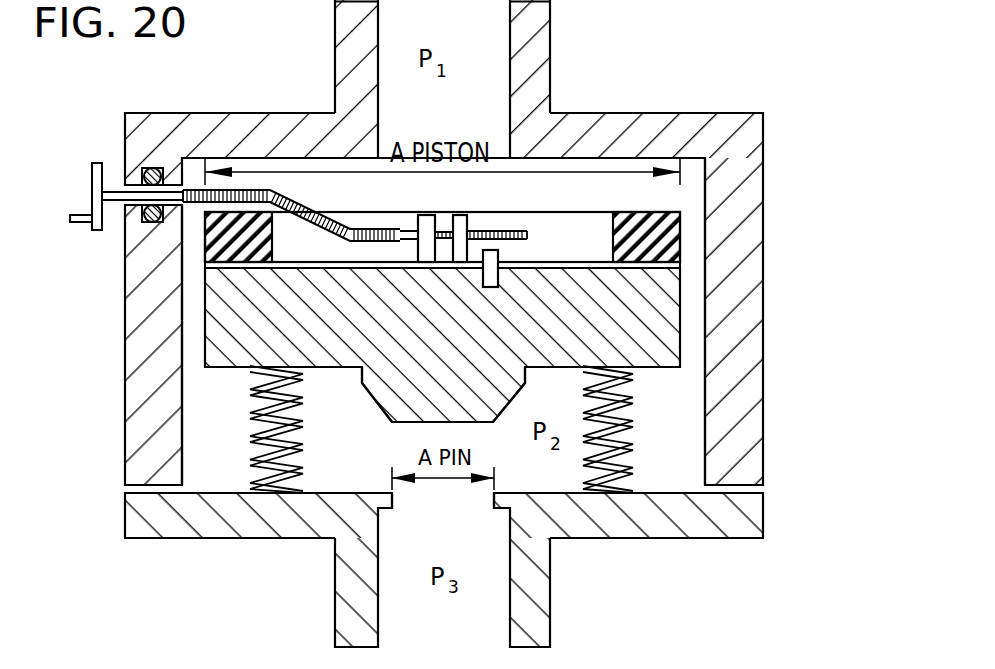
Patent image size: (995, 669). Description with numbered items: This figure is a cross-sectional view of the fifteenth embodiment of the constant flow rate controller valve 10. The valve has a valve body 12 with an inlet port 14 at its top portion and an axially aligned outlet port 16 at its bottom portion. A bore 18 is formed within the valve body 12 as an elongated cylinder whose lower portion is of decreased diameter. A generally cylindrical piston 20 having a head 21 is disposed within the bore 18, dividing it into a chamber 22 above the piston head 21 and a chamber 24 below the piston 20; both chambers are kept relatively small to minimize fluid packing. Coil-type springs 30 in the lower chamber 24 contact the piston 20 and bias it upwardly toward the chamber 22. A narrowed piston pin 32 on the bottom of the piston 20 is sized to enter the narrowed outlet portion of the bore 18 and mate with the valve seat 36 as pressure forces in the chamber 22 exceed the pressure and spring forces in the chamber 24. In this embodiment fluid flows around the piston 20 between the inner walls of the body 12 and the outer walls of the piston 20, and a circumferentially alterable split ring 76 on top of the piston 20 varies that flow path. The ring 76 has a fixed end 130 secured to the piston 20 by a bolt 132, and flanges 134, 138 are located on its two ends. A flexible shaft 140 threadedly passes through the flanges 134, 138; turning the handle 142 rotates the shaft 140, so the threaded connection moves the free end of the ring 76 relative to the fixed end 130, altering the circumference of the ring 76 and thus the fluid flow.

The constant flow rate controller valve 10 is at (648, 37).
The valve body 12 is at (571, 115).
The inlet port 14 is at (490, 30).
The outlet port 16 is at (475, 627).
The bore 18 is at (690, 357).
The piston 20 is at (658, 347).
The head 21 is at (555, 212).
The chamber 22 is at (623, 183).
The chamber 24 is at (687, 480).
The springs 30 is at (253, 417).
The piston pin 32 is at (377, 407).
The valve seat 36 is at (493, 508).
The circumferentially alterable ring 76 is at (217, 238).
The end 130 is at (663, 265).
The bolt 132 is at (493, 257).
The flange 134 is at (460, 218).
The flange 138 is at (427, 218).
The flexible shaft 140 is at (285, 195).
The handle 142 is at (92, 173).